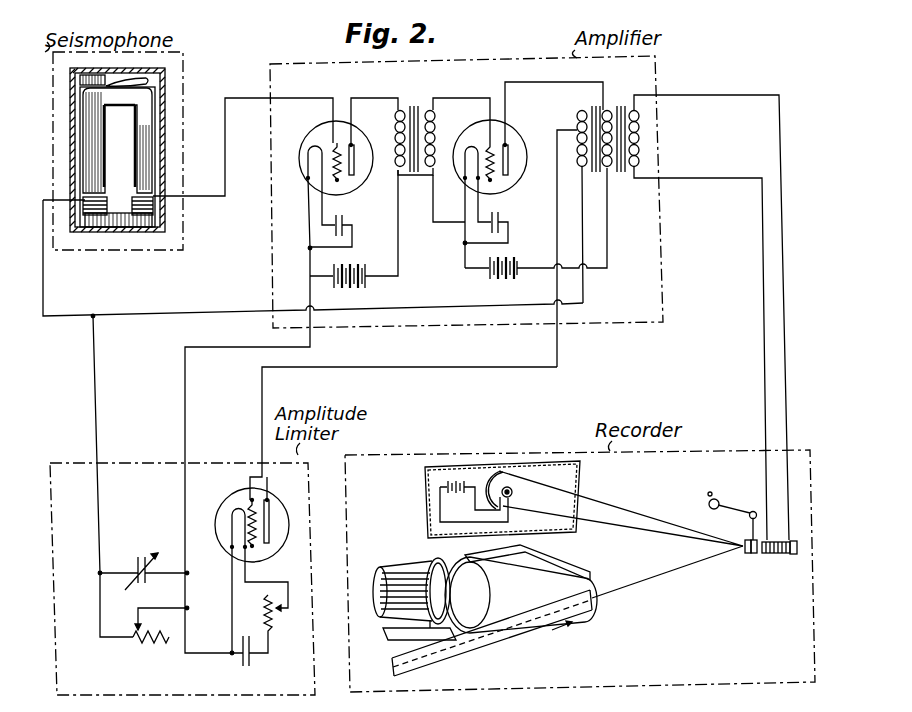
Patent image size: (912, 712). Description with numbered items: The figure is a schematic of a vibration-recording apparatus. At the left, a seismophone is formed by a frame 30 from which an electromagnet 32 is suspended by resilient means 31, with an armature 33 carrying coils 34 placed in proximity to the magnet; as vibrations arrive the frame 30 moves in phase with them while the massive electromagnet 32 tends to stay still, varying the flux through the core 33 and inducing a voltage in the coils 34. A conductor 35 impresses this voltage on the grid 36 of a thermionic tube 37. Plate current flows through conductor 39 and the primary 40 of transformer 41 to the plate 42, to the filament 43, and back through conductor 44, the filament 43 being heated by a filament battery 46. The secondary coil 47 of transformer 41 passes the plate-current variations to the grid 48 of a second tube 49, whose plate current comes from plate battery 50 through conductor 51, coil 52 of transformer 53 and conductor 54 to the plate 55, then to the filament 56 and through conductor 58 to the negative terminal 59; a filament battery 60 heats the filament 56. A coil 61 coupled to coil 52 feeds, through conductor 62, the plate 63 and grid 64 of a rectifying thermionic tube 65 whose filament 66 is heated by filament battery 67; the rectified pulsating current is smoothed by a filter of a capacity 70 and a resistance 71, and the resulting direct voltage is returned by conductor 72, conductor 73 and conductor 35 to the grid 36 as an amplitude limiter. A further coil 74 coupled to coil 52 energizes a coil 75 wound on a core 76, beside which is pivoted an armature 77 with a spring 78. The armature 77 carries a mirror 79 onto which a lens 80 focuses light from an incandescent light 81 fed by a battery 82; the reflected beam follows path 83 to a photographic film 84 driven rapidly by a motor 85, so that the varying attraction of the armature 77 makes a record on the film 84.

The frame 30 is at (165, 103).
The resilient means 31 is at (143, 72).
The electromagnet 32 is at (152, 157).
The armature 33 is at (130, 230).
The coils 34 is at (153, 207).
The conductor 35 is at (225, 162).
The grid 36 is at (335, 143).
The thermionic tube 37 is at (307, 170).
The conductor 39 is at (398, 238).
The primary 40 is at (396, 168).
The transformer 41 is at (414, 104).
The plate 42 is at (354, 147).
The filament 43 is at (309, 152).
The conductor 44 is at (308, 252).
The filament battery 46 is at (343, 220).
The secondary coil 47 is at (466, 150).
The grid 48 is at (489, 143).
The tube 49 is at (507, 147).
The plate battery 50 is at (515, 262).
The conductor 51 is at (607, 235).
The coil 52 is at (598, 104).
The transformer 53 is at (610, 170).
The conductor 54 is at (555, 82).
The plate 55 is at (508, 155).
The filament 56 is at (463, 170).
The conductor 58 is at (463, 248).
The negative terminal 59 is at (494, 282).
The filament battery 60 is at (500, 218).
The coil 61 is at (578, 165).
The conductor 62 is at (558, 350).
The plate 63 is at (269, 504).
The grid 64 is at (250, 505).
The thermionic tube 65 is at (280, 552).
The filament 66 is at (228, 533).
The filament battery 67 is at (248, 662).
The capacity 70 is at (142, 555).
The resistance 71 is at (146, 642).
The conductor 72 is at (99, 378).
The conductor 73 is at (43, 282).
The coil 74 is at (640, 134).
The coil 75 is at (775, 554).
The core 76 is at (795, 555).
The armature 77 is at (754, 554).
The spring 78 is at (717, 500).
The mirror 79 is at (747, 554).
The lens 80 is at (580, 498).
The incandescent light 81 is at (513, 493).
The battery 82 is at (440, 483).
The path 83 is at (645, 580).
The photographic film 84 is at (455, 663).
The motor 85 is at (405, 562).